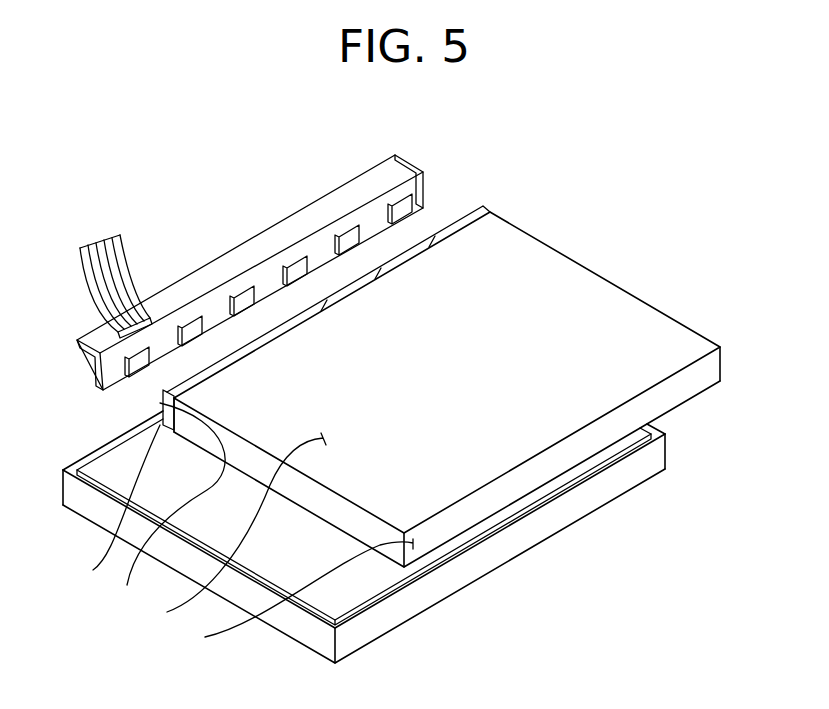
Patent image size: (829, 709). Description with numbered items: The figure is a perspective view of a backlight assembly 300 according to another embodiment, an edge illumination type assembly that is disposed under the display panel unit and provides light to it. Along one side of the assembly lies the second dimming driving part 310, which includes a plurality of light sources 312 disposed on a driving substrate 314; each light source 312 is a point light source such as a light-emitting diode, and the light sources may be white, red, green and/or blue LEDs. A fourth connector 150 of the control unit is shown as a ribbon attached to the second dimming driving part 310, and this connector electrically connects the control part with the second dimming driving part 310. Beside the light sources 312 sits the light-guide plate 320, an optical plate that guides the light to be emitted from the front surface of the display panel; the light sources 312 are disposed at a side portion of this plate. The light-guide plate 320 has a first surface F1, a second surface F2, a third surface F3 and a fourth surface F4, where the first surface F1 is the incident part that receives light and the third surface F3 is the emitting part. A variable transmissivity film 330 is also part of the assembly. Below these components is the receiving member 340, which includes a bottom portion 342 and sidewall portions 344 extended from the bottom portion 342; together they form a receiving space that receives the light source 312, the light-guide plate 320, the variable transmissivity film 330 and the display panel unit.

The fourth connector 150 is at (100, 285).
The backlight assembly 300 is at (402, 401).
The second dimming driving part 310 is at (325, 255).
The light source 312 is at (410, 208).
The driving substrate 314 is at (403, 173).
The light-guide plate 320 is at (364, 546).
The variable transmissivity film 330 is at (163, 398).
The receiving member 340 is at (364, 546).
The bottom portion 342 is at (352, 591).
The sidewall portions 344 is at (368, 625).
The first surface F1 is at (113, 507).
The second surface F2 is at (295, 595).
The third surface F3 is at (233, 531).
The fourth surface F4 is at (163, 507).